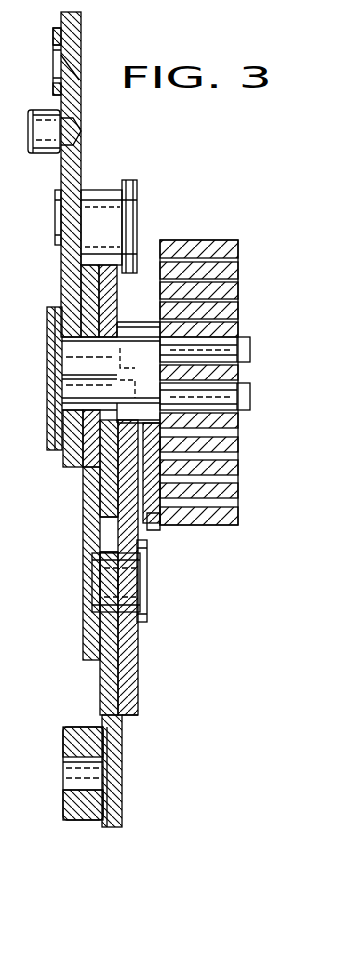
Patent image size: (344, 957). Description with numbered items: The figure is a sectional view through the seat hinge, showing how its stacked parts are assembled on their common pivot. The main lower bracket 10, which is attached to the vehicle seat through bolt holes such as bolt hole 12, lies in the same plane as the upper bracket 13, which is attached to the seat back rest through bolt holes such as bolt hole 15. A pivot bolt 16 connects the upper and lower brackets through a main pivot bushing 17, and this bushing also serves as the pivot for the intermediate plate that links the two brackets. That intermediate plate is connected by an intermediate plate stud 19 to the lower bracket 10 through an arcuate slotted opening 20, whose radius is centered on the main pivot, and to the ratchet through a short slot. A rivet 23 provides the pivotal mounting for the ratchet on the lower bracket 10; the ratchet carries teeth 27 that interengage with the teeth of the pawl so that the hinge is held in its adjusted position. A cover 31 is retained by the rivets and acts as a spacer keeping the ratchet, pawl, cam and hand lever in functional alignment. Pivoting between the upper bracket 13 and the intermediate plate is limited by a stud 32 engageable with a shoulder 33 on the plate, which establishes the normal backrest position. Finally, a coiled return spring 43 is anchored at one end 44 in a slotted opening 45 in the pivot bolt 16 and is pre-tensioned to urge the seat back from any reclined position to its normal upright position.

The main lower bracket 10 is at (120, 826).
The bolt hole 12 is at (117, 795).
The upper bracket 13 is at (82, 162).
The bolt hole 15 is at (72, 53).
The pivot bolt 16 is at (242, 337).
The main pivot bushing 17 is at (162, 357).
The intermediate plate stud 19 is at (143, 575).
The arcuate slotted opening 20 is at (145, 603).
The rivet 23 is at (125, 477).
The teeth 27 is at (140, 685).
The cover 31 is at (150, 525).
The stud 32 is at (103, 190).
The shoulder 33 is at (60, 246).
The coiled return spring 43 is at (240, 448).
The end of return spring 44 is at (208, 380).
The slotted opening 45 is at (240, 372).